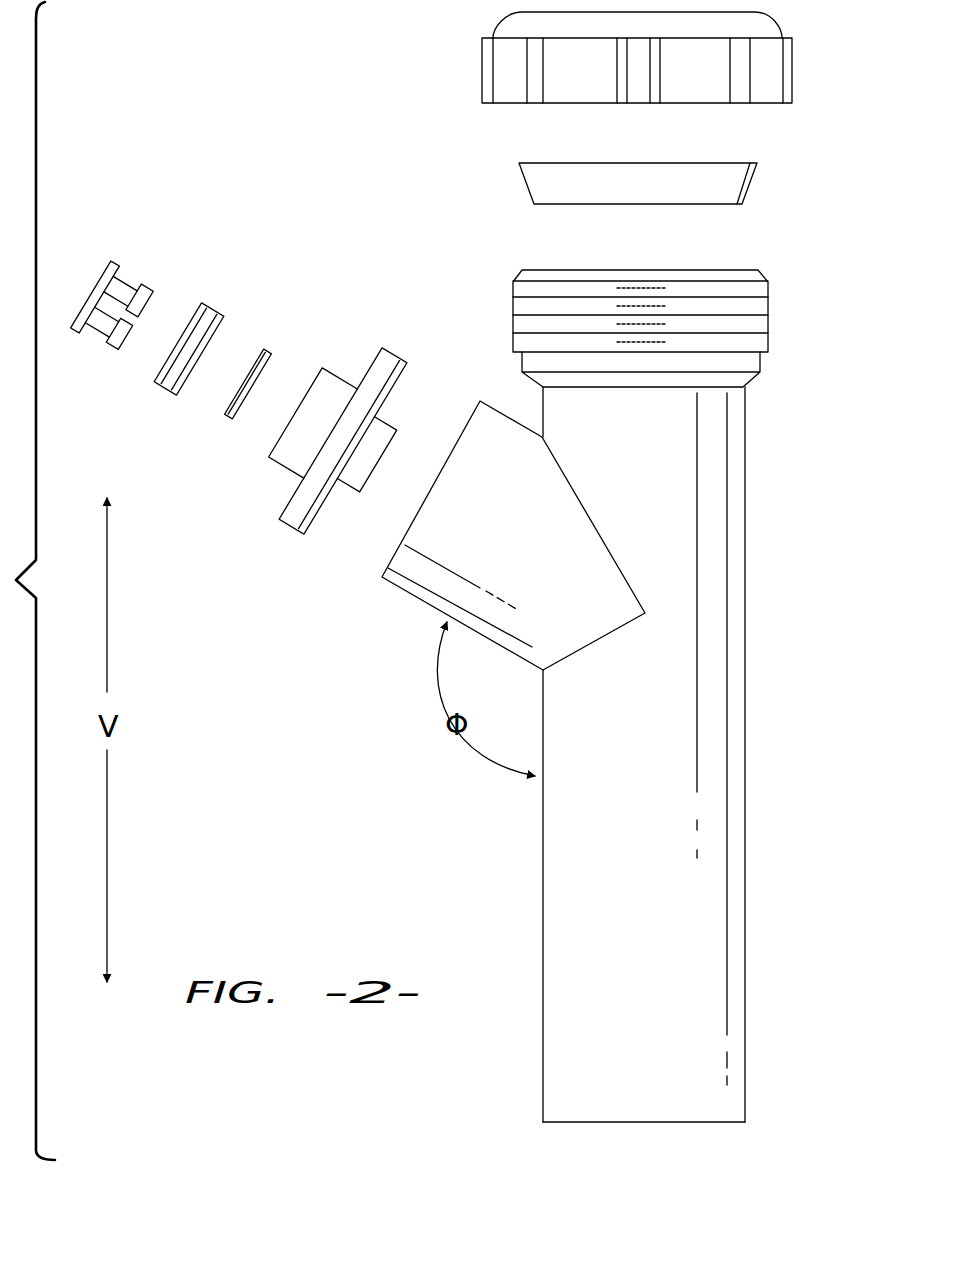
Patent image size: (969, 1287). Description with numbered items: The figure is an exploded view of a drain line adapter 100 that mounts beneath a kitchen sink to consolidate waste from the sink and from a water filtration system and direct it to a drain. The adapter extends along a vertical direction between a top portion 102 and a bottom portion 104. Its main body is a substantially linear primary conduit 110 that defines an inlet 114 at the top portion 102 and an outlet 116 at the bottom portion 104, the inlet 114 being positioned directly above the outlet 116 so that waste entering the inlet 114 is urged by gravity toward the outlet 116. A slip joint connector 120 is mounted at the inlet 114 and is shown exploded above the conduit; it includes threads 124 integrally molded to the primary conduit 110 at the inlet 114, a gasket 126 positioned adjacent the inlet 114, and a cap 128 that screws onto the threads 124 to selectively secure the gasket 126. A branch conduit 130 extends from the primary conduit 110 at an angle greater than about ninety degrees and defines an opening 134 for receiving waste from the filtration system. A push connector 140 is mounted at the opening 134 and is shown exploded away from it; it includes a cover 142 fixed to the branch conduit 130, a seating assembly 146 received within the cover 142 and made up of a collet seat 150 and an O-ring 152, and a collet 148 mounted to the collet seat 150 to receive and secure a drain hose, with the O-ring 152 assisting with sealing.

The drain line adapter 100 is at (248, 112).
The top portion 102 is at (560, 690).
The bottom portion 104 is at (579, 1116).
The primary conduit 110 is at (607, 783).
The inlet 114 is at (610, 284).
The outlet 116 is at (648, 1124).
The slip joint connector 120 is at (586, 132).
The threads 124 is at (550, 298).
The gasket 126 is at (645, 190).
The cap 128 is at (687, 89).
The branch conduit 130 is at (481, 535).
The opening 134 is at (407, 520).
The push connector 140 is at (265, 391).
The cover 142 is at (329, 422).
The seating assembly 146 is at (157, 344).
The collet 148 is at (143, 297).
The collet seat 150 is at (213, 317).
The O-ring 152 is at (263, 353).